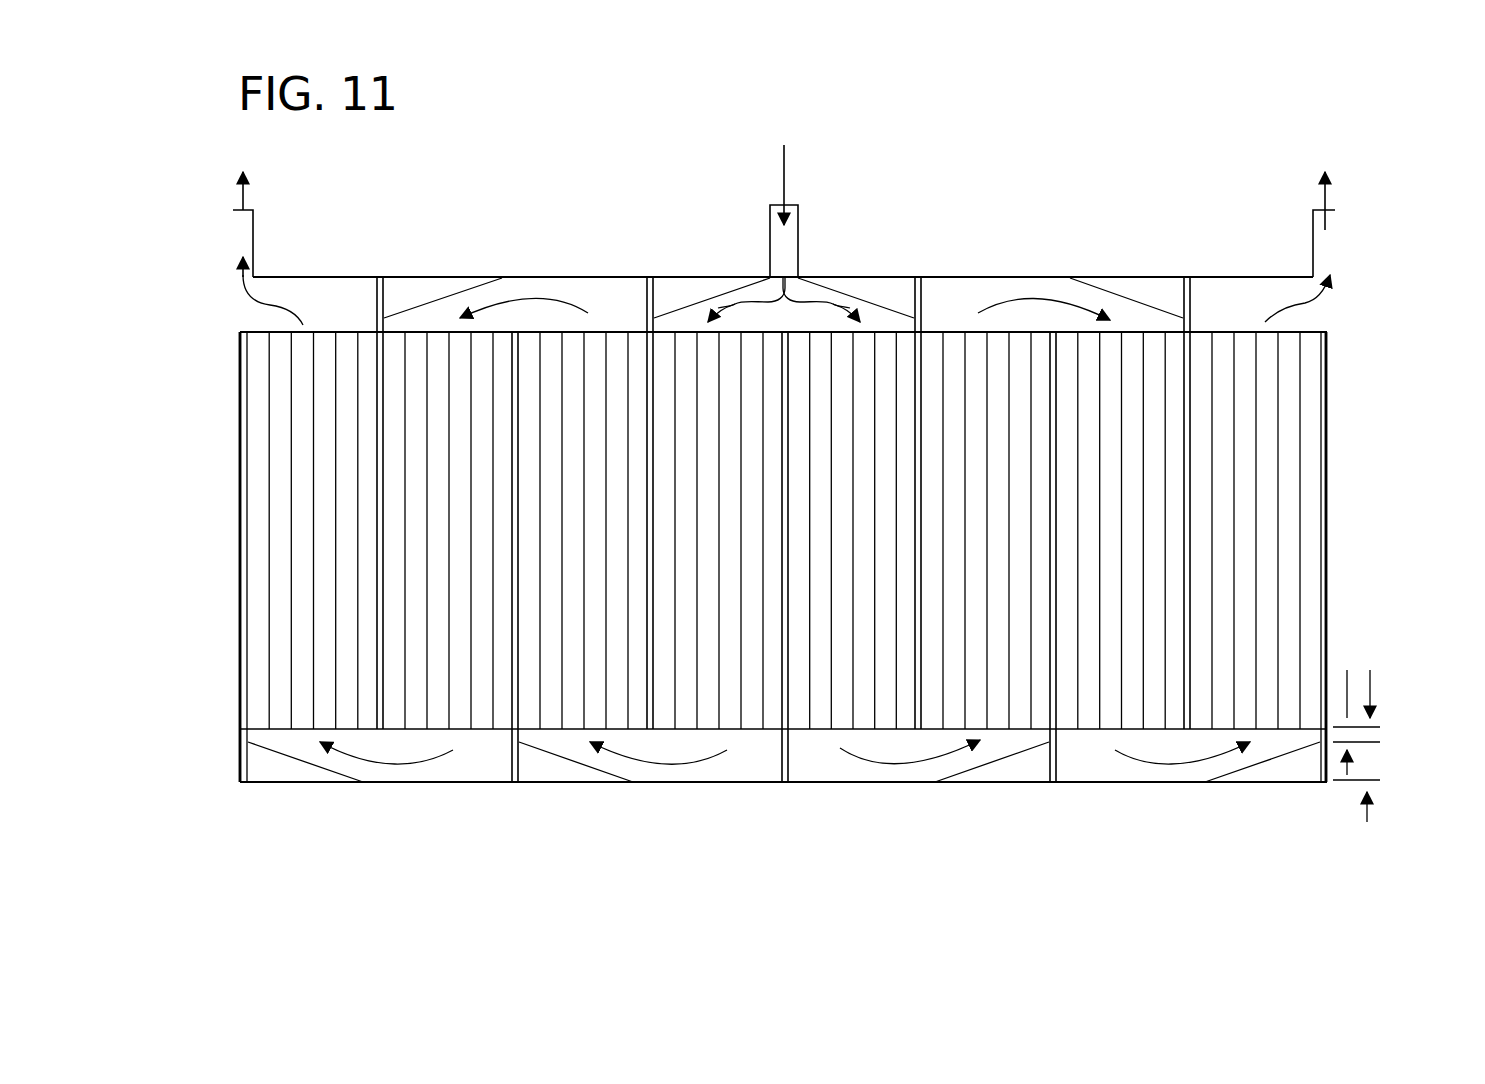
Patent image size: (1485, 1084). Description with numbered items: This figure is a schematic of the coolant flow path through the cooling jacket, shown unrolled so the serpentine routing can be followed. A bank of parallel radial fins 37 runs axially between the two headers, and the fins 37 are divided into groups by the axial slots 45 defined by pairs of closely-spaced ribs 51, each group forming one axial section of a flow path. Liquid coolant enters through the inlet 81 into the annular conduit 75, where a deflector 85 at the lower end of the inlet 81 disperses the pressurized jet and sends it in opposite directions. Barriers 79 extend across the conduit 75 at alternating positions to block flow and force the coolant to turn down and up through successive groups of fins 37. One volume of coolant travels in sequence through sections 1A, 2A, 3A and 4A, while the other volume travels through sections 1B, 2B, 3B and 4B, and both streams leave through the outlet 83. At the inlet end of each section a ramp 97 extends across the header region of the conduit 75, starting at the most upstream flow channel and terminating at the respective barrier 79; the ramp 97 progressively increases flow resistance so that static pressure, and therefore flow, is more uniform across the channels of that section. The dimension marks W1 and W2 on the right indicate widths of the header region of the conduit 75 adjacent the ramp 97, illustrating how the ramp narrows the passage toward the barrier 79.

The annular conduit 75 is at (1000, 290).
The barrier 79 is at (384, 295).
The inlet 81 is at (800, 232).
The outlet 83 is at (253, 225).
The deflector 85 is at (730, 302).
The ramp 97 is at (465, 287).
The radial fin 37 is at (1257, 495).
The axial slot 45 is at (1185, 427).
The rib 51 is at (783, 557).
The first axial section of first flow path 1A is at (687, 360).
The first axial section of second flow path 1B is at (880, 367).
The second axial section of first flow path 2A is at (613, 357).
The second axial section of second flow path 2B is at (977, 363).
The third axial section of first flow path 3A is at (440, 357).
The third axial section of second flow path 3B is at (1135, 347).
The fourth axial section of first flow path 4A is at (322, 367).
The fourth axial section of second flow path 4B is at (1243, 347).
The width W1 is at (1367, 822).
The width W2 is at (1347, 775).